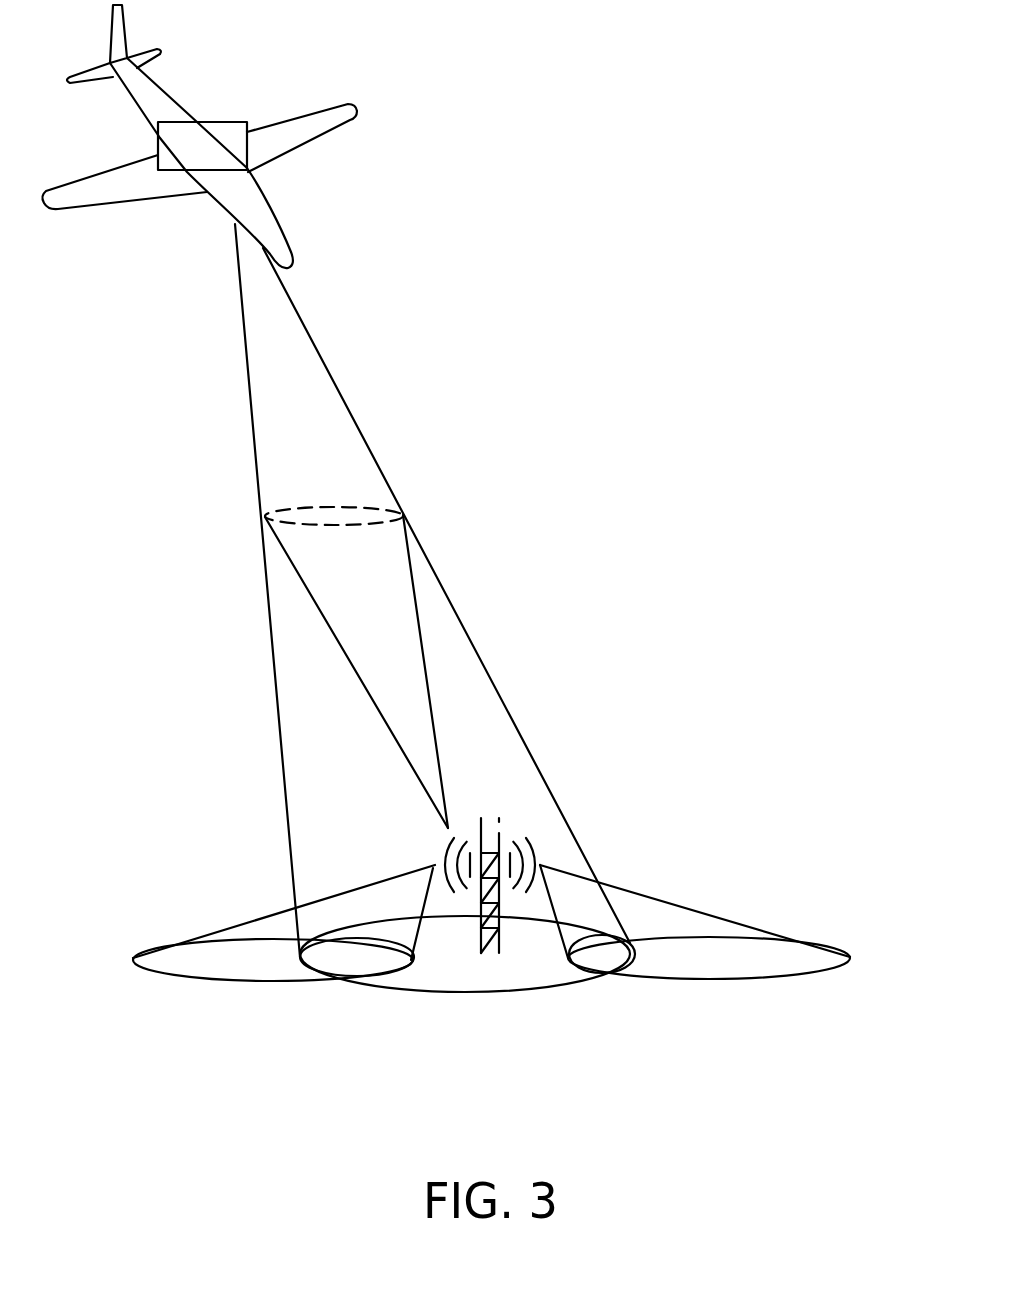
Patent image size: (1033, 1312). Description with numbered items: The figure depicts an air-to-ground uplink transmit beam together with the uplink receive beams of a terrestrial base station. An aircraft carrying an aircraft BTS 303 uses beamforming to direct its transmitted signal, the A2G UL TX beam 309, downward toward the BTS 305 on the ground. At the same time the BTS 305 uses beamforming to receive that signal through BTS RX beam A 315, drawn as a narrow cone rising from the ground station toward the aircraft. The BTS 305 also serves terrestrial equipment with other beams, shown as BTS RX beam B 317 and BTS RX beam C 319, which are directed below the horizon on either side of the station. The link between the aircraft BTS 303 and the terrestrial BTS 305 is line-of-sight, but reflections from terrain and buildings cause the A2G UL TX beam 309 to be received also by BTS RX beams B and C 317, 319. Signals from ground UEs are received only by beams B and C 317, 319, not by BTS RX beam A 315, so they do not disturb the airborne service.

The aircraft BTS 303 is at (227, 121).
The BTS on the ground 305 is at (478, 940).
The A2G UL TX beam 309 is at (350, 417).
The BTS RX beam A 315 is at (412, 562).
The BTS RX beam B 317 is at (653, 895).
The BTS RX beam C 319 is at (243, 920).